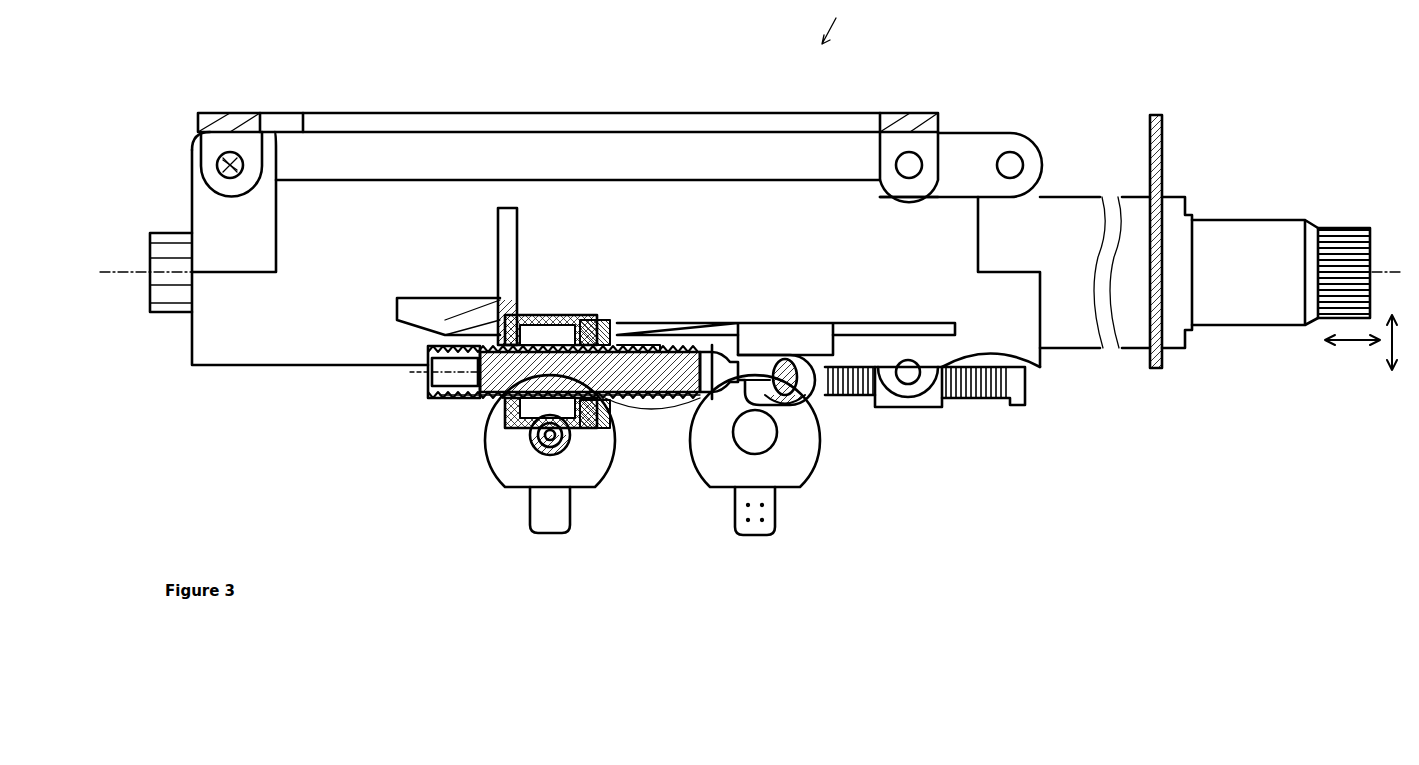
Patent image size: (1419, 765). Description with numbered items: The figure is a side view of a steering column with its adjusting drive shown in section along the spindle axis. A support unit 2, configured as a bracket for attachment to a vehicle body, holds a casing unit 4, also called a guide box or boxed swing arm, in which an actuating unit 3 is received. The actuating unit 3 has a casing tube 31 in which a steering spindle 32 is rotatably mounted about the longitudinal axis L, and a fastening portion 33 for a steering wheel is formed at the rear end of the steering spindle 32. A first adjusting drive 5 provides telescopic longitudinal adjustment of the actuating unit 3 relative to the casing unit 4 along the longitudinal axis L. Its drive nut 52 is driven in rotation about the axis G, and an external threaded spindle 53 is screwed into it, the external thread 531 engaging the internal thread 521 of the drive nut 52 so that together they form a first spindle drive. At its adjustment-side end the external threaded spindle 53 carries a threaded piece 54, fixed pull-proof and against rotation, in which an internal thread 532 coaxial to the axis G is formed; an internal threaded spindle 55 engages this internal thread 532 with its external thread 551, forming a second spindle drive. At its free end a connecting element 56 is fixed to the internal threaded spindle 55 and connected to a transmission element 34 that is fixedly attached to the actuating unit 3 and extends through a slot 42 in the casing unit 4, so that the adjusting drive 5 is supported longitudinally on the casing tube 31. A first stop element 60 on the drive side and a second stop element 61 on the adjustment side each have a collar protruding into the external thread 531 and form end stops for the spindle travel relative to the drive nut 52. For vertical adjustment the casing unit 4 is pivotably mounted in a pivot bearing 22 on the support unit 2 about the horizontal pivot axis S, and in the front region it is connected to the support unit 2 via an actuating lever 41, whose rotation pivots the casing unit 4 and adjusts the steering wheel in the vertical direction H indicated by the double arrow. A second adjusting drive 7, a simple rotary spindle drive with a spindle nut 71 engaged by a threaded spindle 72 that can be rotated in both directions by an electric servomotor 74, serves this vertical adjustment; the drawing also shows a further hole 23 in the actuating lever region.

The support unit 2 is at (603, 124).
The actuating unit 3 is at (1069, 163).
The casing unit 4 is at (250, 320).
The first adjusting drive 5 is at (514, 505).
The second adjusting drive 7 is at (842, 430).
The pivot bearing 22 is at (228, 150).
The pivot hole 23 is at (1010, 158).
The casing tube 31 is at (1078, 215).
The steering spindle 32 is at (1278, 240).
The fastening portion 33 is at (1340, 225).
The transmission element 34 is at (785, 330).
The actuating lever 41 is at (962, 158).
The slot 42 is at (862, 392).
The drive nut 52 is at (512, 432).
The external threaded spindle 53 is at (448, 388).
The threaded piece 54 is at (650, 400).
The internal threaded spindle 55 is at (688, 405).
The connecting element 56 is at (740, 392).
The first stop element 60 is at (432, 385).
The second stop element 61 is at (606, 335).
The spindle nut 71 is at (935, 402).
The threaded spindle 72 is at (978, 397).
The electric servomotor 74 is at (795, 447).
The internal thread 521 is at (502, 412).
The external thread 531 is at (458, 396).
The internal thread 532 is at (642, 332).
The external thread 551 is at (662, 405).
The pivot axis S is at (216, 160).
The axis G is at (410, 375).
The longitudinal axis L is at (112, 260).
The vertical direction H is at (1352, 345).